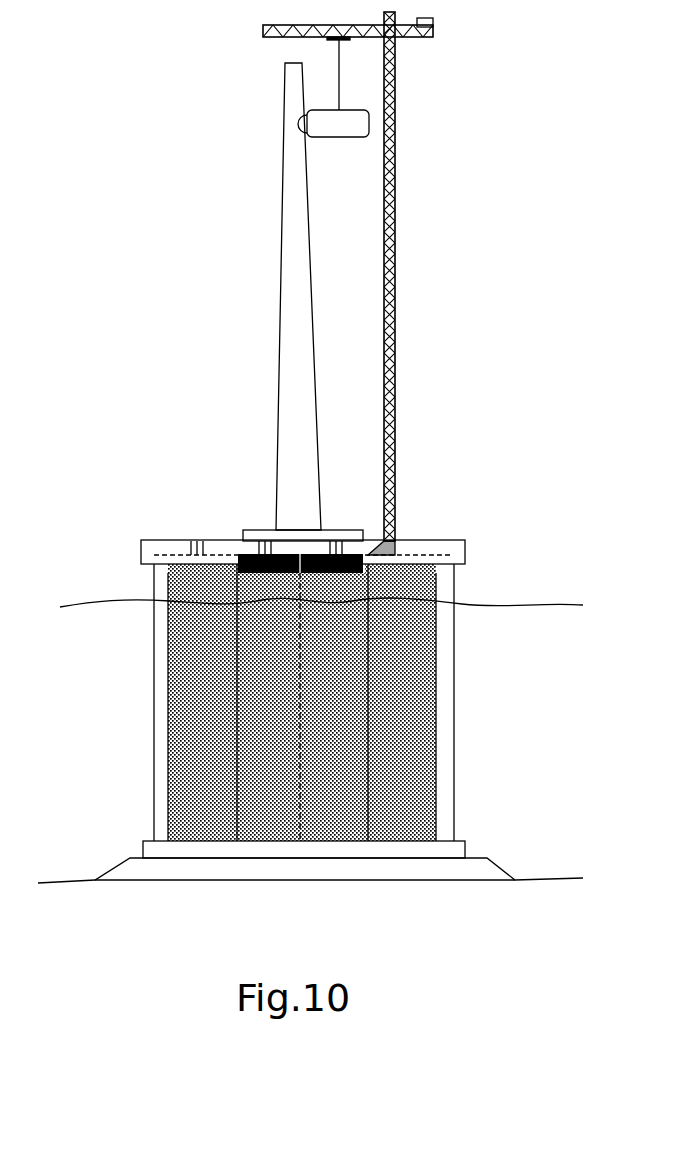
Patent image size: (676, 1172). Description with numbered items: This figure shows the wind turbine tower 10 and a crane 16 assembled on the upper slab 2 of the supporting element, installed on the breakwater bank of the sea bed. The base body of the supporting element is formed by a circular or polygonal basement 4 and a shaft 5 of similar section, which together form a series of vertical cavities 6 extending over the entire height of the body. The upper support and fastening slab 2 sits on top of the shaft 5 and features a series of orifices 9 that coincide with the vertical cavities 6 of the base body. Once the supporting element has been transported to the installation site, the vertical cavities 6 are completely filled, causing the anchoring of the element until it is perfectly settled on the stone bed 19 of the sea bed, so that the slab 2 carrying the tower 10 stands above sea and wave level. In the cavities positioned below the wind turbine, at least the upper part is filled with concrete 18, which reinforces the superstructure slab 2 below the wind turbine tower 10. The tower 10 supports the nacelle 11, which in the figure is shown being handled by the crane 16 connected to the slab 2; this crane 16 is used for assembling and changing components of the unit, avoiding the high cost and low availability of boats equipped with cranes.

The slab 2 is at (141, 540).
The basement 4 is at (155, 843).
The shaft 5 is at (156, 664).
The vertical cavities 6 is at (198, 718).
The orifices 9 is at (196, 540).
The tower 10 is at (290, 260).
The nacelle 11 is at (363, 120).
The crane 16 is at (397, 236).
The concrete 18 is at (372, 554).
The stone bed 19 is at (130, 858).